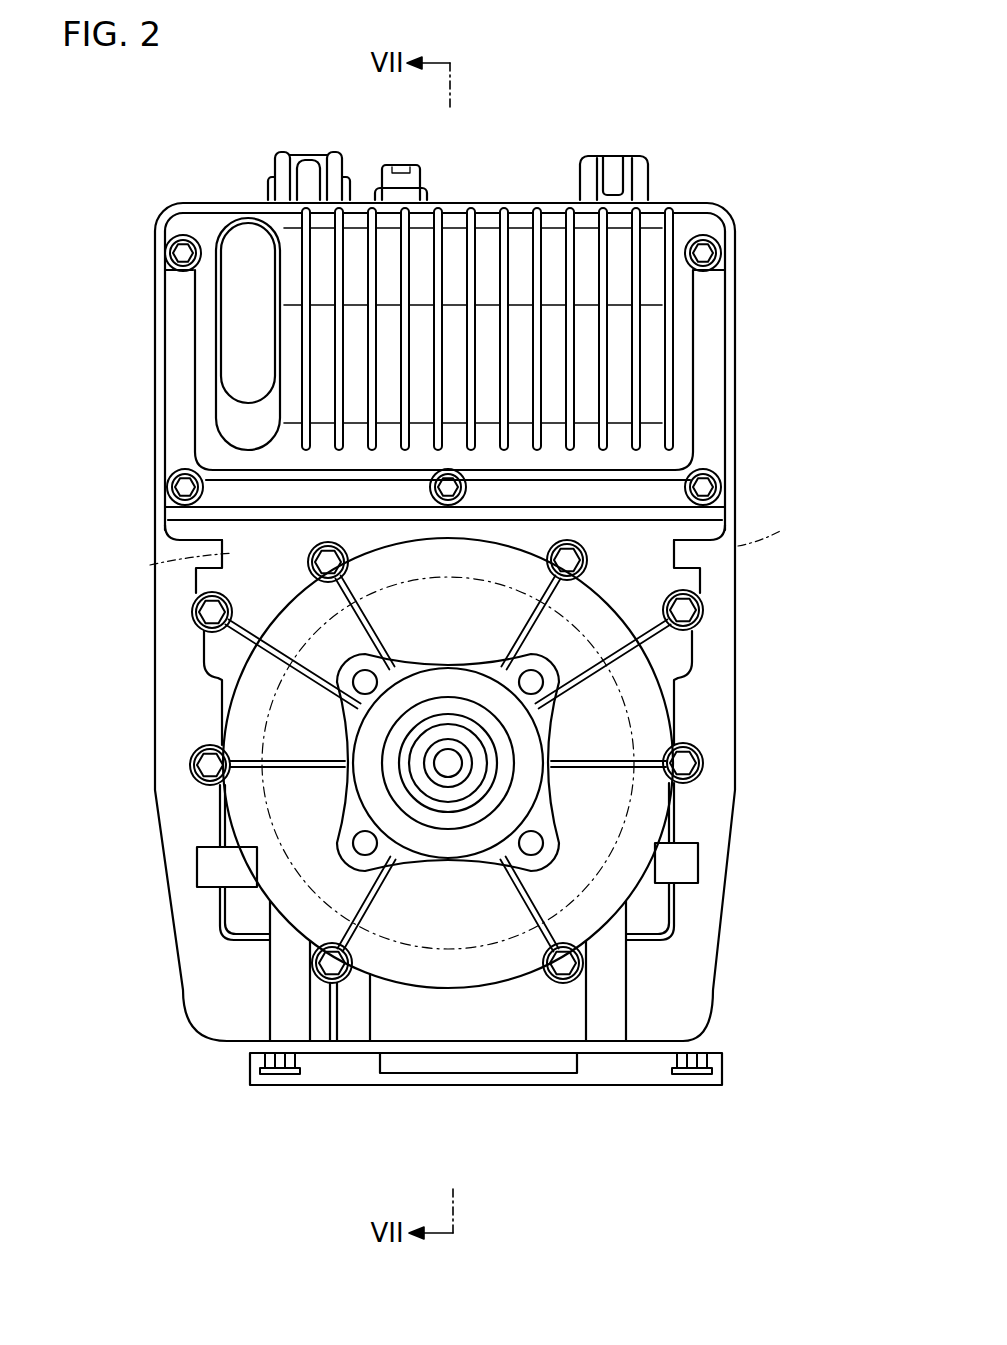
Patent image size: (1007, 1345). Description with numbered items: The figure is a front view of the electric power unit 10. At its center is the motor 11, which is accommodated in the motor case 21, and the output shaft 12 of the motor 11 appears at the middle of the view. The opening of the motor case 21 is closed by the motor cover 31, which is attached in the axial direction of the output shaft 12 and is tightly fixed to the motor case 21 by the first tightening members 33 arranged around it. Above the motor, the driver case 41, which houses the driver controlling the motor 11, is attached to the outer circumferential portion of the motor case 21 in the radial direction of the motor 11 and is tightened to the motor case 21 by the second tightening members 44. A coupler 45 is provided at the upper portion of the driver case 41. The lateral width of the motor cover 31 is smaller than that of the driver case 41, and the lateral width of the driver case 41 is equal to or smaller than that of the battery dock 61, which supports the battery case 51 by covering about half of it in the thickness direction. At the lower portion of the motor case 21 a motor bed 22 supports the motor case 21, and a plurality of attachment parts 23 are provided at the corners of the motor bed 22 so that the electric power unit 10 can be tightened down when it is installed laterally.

The electric power unit 10 is at (742, 90).
The motor 11 is at (635, 728).
The output shaft 12 is at (455, 770).
The motor case 21 is at (228, 548).
The motor bed 22 is at (575, 1085).
The attachment parts 23 is at (247, 1063).
The motor cover 31 is at (457, 977).
The first tightening members 33 is at (208, 763).
The driver case 41 is at (175, 347).
The second tightening members 44 is at (183, 250).
The coupler 45 is at (310, 160).
The battery case 51 is at (232, 200).
The battery dock 61 is at (738, 547).